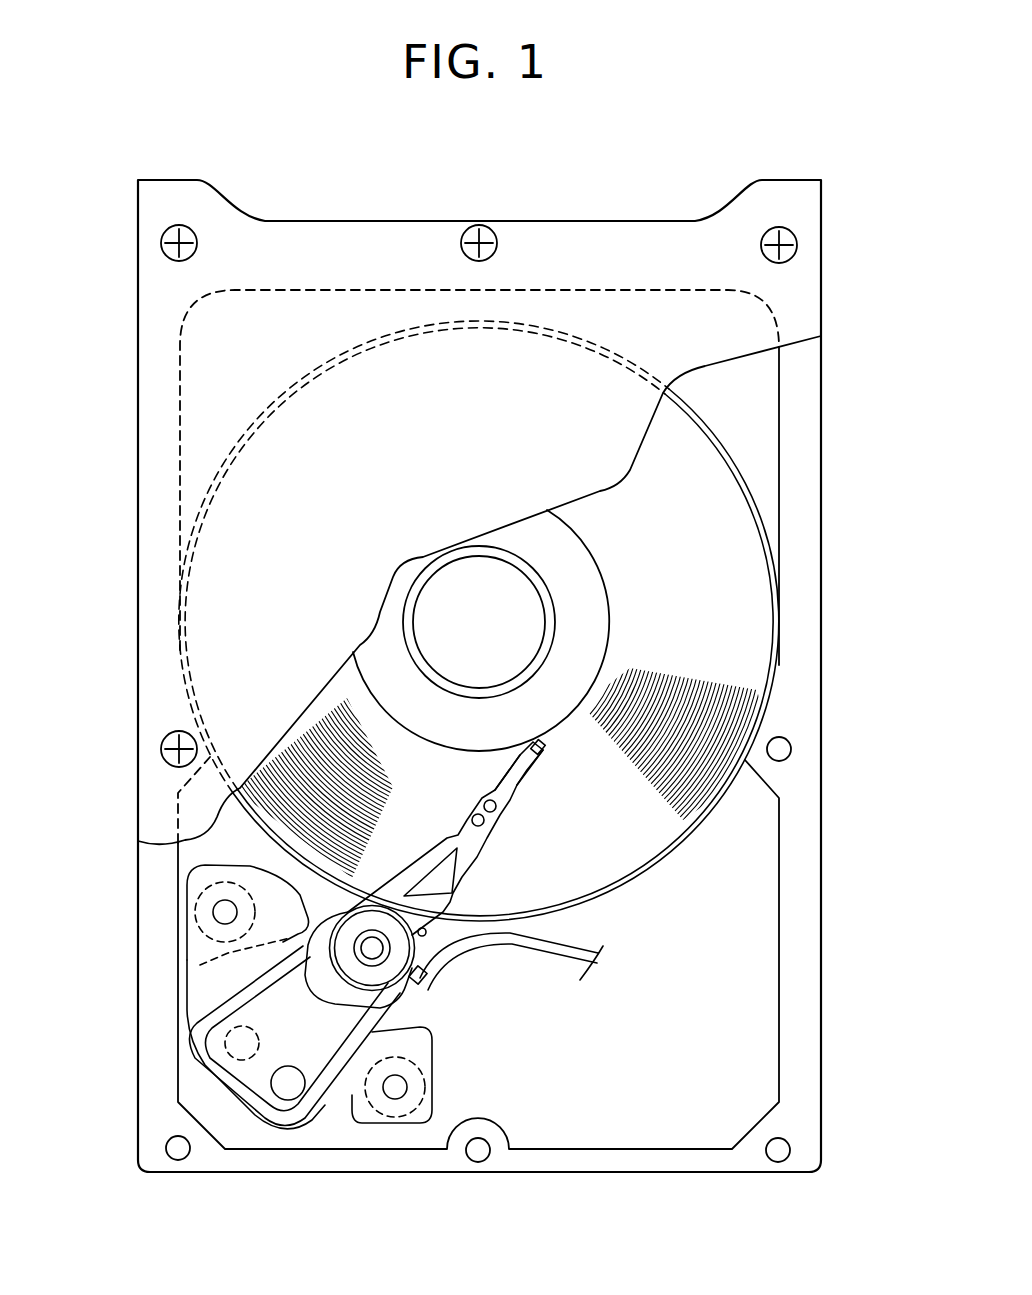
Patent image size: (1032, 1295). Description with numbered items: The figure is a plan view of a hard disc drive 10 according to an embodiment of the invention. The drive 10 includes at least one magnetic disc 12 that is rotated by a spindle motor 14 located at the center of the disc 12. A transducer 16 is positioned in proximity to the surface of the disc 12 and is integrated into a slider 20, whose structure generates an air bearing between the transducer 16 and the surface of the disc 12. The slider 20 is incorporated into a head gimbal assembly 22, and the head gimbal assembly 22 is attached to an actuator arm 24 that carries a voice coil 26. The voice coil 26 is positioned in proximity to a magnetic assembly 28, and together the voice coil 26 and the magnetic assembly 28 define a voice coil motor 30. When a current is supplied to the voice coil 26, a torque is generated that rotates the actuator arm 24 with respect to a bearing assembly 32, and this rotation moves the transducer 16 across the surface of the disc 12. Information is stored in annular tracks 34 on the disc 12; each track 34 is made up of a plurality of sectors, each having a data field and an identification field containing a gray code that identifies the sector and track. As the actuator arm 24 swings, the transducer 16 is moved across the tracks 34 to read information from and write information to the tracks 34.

The hard disc drive 10 is at (620, 137).
The magnetic disc 12 is at (735, 558).
The spindle motor 14 is at (455, 598).
The transducer 16 is at (547, 750).
The slider 20 is at (527, 768).
The head gimbal assembly 22 is at (482, 861).
The actuator arm 24 is at (285, 967).
The voice coil 26 is at (213, 1032).
The magnetic assembly 28 is at (223, 980).
The voice coil motor 30 is at (340, 1103).
The bearing assembly 32 is at (387, 960).
The annular tracks 34 is at (334, 742).